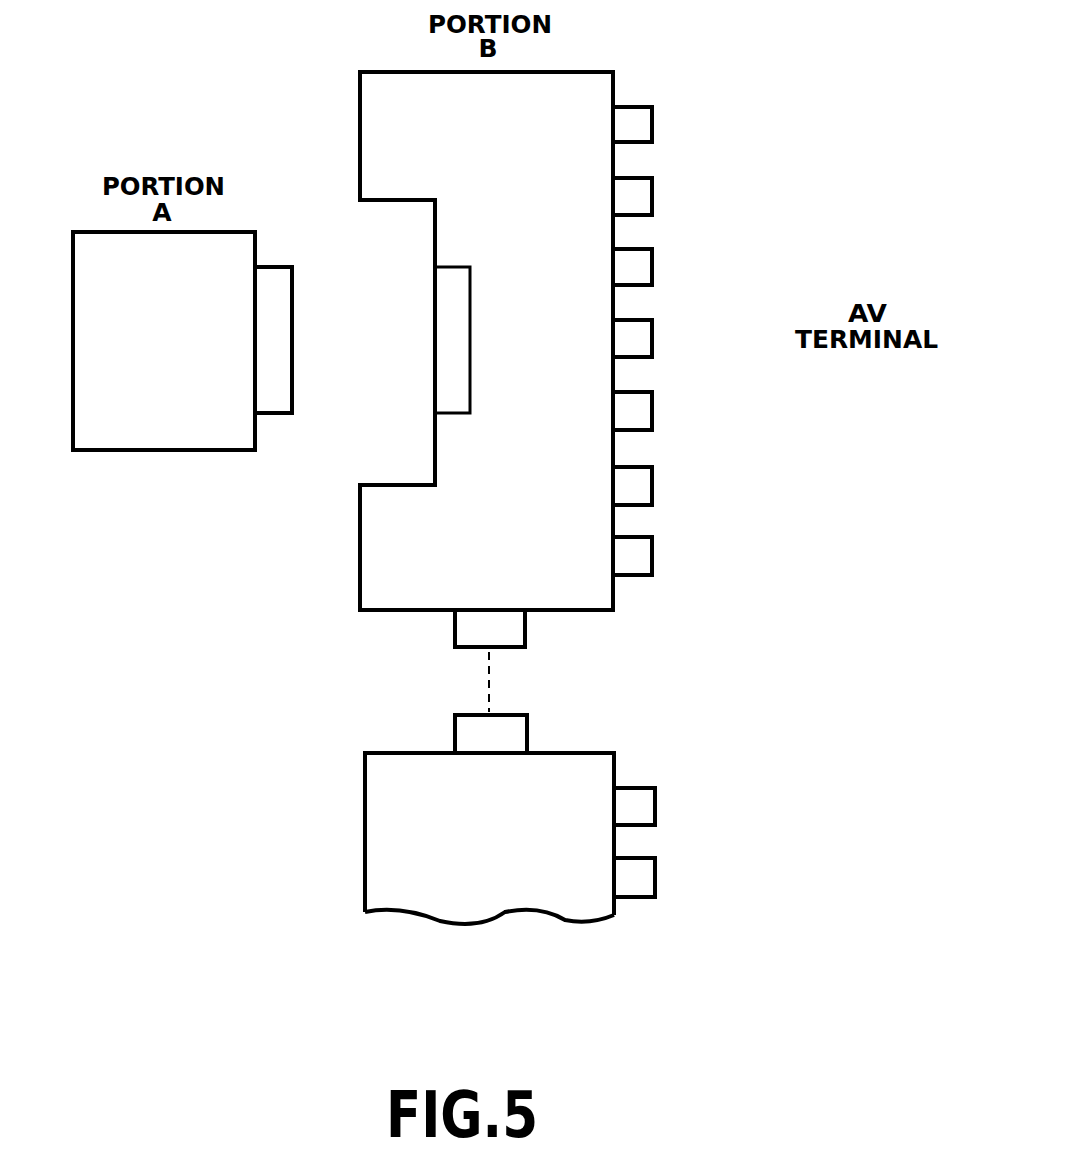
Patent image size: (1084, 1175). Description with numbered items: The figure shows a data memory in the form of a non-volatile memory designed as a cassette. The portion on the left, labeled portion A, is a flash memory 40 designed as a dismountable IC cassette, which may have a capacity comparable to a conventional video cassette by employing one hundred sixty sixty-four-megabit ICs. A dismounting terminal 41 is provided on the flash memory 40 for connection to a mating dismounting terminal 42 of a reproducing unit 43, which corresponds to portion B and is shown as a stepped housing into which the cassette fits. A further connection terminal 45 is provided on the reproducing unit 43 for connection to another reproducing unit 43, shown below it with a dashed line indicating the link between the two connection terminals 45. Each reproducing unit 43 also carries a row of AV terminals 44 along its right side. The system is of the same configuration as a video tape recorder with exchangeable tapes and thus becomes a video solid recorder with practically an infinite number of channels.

The flash memory 40 is at (183, 428).
The dismounting terminal 41 is at (266, 398).
The mating dismounting terminal 42 is at (455, 325).
The reproducing unit 43 is at (433, 578).
The AV terminal 44 is at (637, 200).
The connection terminal 45 is at (512, 625).